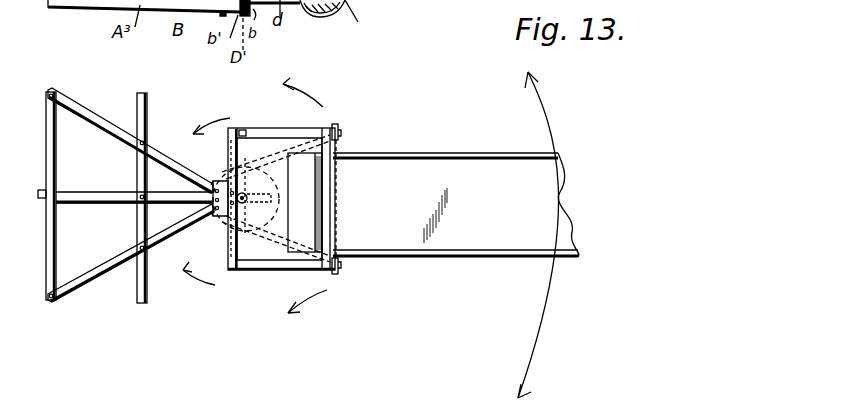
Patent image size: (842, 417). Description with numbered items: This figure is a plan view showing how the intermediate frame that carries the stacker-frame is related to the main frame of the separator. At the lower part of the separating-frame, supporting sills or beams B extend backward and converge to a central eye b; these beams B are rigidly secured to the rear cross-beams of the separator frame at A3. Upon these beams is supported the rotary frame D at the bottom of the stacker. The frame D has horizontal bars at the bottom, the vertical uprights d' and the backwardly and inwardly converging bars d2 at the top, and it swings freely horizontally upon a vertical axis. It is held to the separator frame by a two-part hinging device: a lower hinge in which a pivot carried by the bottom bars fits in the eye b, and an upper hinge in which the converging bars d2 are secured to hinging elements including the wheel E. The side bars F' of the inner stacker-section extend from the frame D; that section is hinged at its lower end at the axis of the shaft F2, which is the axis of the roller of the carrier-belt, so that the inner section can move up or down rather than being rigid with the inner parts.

The supporting sills or beams B is at (126, 197).
The rear cross-beams of the separator frame A3 is at (142, 303).
The wheel E is at (214, 216).
The rotary frame D is at (296, 207).
The vertical uprights d' is at (313, 217).
The backwardly inwardly converging bars d2 is at (280, 155).
The central eye b is at (248, 202).
The arm F' is at (456, 191).
The shaft F2 is at (363, 32).